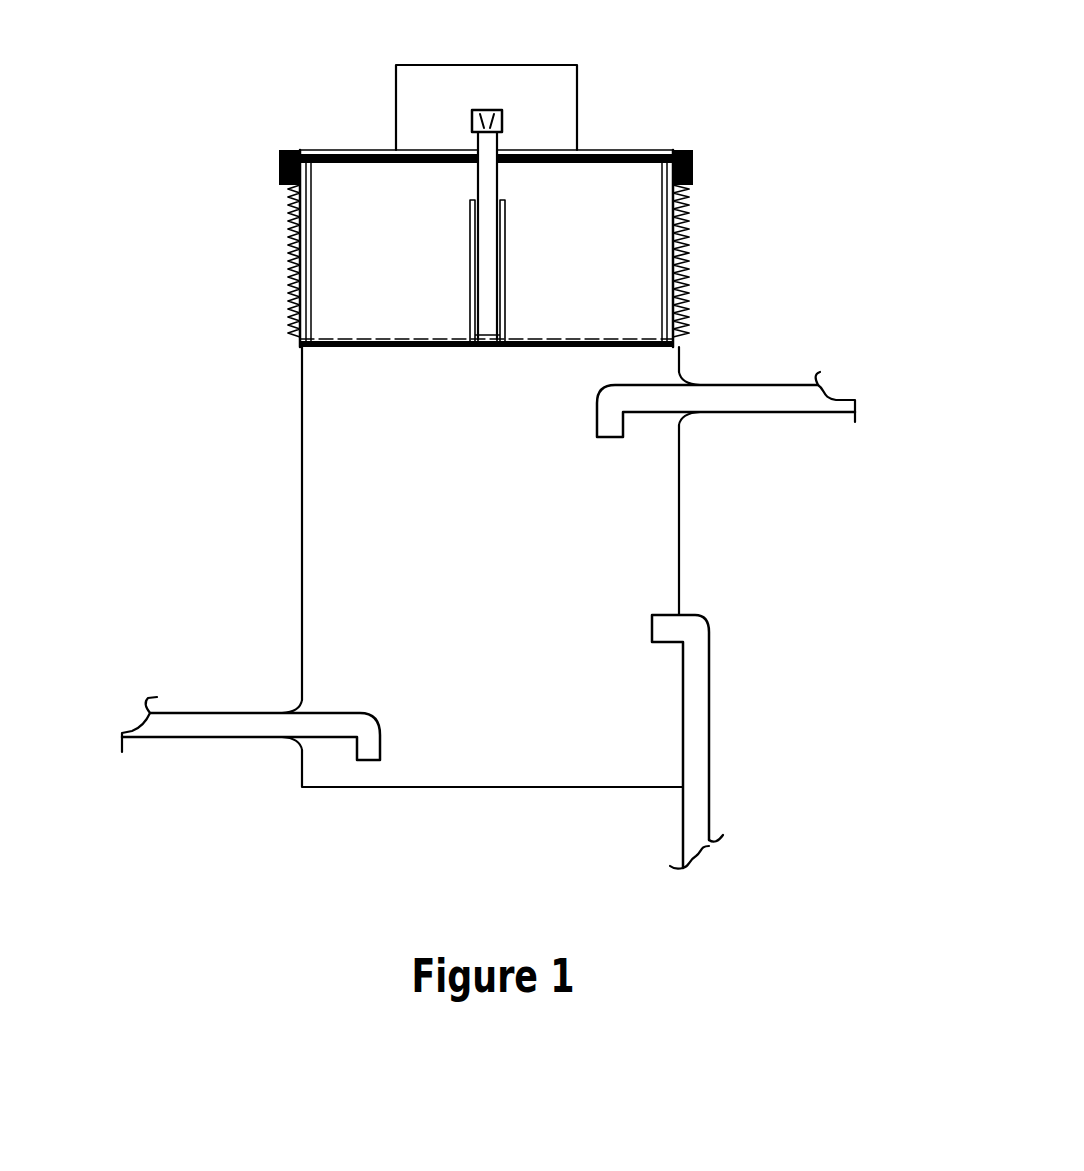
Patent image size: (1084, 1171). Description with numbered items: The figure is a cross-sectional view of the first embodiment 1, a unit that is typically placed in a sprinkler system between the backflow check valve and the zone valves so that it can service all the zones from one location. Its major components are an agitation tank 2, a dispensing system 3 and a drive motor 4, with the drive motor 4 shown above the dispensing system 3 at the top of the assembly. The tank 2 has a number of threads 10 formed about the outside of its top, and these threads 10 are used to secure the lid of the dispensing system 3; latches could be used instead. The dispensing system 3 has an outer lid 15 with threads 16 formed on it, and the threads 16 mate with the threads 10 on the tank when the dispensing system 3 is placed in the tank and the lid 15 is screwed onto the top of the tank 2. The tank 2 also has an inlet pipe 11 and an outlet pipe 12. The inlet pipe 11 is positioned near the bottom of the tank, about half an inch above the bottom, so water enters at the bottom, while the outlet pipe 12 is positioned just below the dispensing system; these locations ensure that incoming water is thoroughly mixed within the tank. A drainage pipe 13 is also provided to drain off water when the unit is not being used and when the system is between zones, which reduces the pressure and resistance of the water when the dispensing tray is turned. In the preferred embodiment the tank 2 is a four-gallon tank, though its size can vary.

The first embodiment 1 is at (218, 423).
The agitation tank 2 is at (285, 609).
The dispensing system 3 is at (708, 254).
The drive motor 4 is at (580, 105).
The threads 10 is at (291, 301).
The inlet pipe 11 is at (228, 738).
The outlet pipe 12 is at (783, 410).
The drainage pipe 13 is at (712, 680).
The outer lid 15 is at (340, 148).
The threads 16 is at (691, 186).